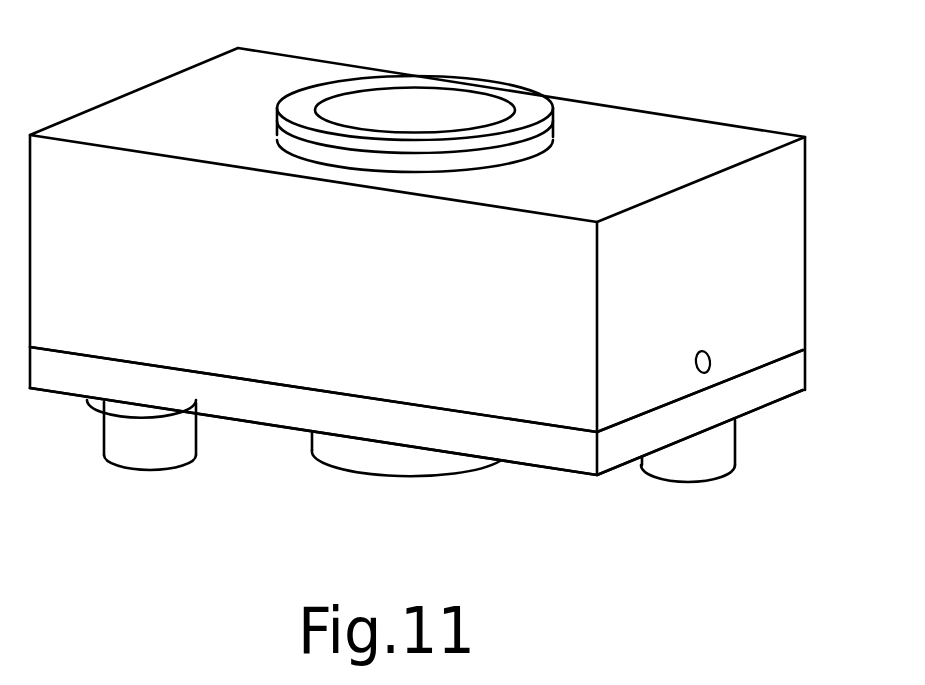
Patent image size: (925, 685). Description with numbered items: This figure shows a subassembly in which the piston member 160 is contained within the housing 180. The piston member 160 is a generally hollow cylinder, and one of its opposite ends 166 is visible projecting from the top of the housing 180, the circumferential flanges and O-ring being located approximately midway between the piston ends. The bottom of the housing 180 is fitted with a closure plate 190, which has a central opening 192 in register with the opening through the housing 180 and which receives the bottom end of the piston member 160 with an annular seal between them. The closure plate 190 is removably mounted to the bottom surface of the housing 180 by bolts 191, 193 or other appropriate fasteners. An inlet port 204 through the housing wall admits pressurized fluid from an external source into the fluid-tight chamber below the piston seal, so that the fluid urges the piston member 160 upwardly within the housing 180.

The piston member 160 is at (422, 102).
The end of the piston member 166 is at (475, 90).
The housing 180 is at (805, 188).
The closure plate 190 is at (539, 447).
The bolt 191 is at (157, 461).
The central opening 192 is at (406, 454).
The bolt 193 is at (707, 481).
The inlet port 204 is at (711, 356).